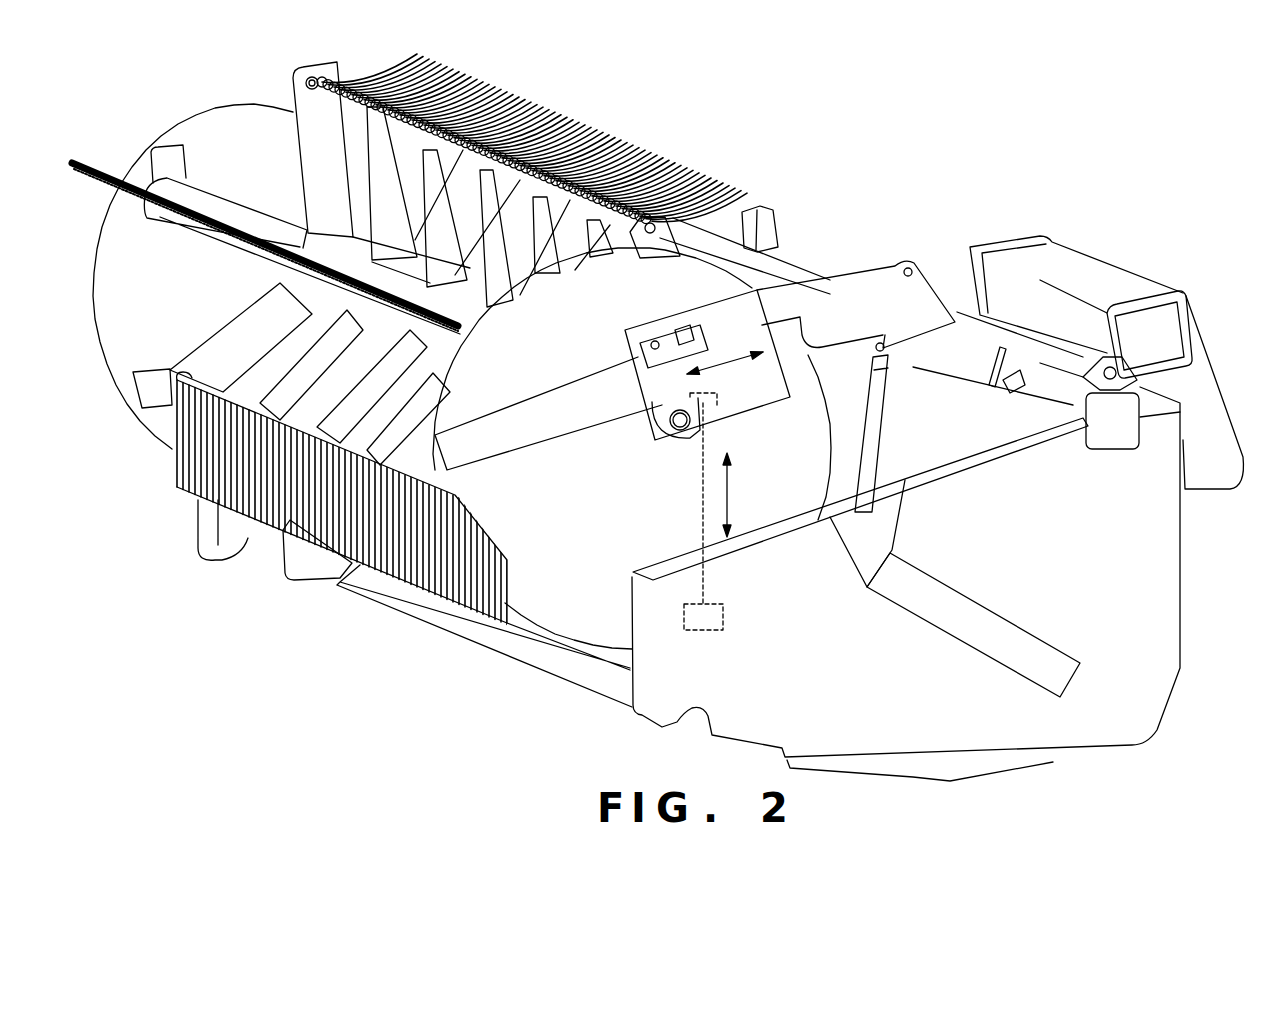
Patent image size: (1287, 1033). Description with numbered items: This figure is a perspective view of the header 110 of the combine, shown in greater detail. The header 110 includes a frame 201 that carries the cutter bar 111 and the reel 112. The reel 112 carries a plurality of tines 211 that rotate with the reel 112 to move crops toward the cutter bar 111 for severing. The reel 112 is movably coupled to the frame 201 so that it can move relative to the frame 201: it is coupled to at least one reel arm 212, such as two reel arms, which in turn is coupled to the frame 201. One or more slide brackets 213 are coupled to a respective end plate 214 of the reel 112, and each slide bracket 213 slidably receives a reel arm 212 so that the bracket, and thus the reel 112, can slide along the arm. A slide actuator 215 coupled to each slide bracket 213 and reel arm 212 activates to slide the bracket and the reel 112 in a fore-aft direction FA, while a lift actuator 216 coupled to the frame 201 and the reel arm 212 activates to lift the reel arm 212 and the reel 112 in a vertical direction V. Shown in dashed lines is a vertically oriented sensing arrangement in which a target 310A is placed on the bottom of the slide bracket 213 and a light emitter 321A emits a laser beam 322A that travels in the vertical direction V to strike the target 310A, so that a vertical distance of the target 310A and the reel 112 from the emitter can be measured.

The header 110 is at (786, 135).
The cutter bar 111 is at (517, 672).
The reel 112 is at (218, 321).
The frame 201 is at (1143, 539).
The tines 211 is at (198, 557).
The reel arm 212 is at (530, 418).
The slide bracket 213 is at (645, 404).
The end plate 214 is at (248, 143).
The slide actuator 215 is at (831, 285).
The lift actuator 216 is at (886, 425).
The target 310A is at (698, 408).
The light emitter 321A is at (724, 623).
The laser beam 322A is at (700, 533).
The fore-aft direction FA is at (735, 365).
The vertical direction V is at (738, 494).